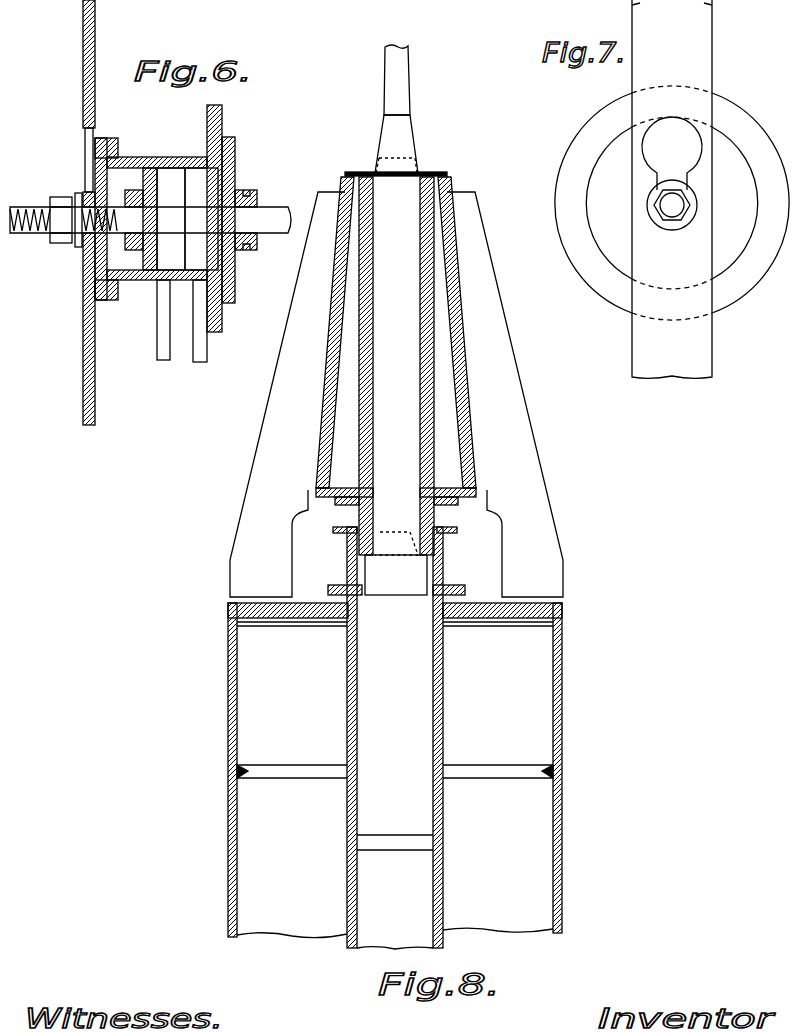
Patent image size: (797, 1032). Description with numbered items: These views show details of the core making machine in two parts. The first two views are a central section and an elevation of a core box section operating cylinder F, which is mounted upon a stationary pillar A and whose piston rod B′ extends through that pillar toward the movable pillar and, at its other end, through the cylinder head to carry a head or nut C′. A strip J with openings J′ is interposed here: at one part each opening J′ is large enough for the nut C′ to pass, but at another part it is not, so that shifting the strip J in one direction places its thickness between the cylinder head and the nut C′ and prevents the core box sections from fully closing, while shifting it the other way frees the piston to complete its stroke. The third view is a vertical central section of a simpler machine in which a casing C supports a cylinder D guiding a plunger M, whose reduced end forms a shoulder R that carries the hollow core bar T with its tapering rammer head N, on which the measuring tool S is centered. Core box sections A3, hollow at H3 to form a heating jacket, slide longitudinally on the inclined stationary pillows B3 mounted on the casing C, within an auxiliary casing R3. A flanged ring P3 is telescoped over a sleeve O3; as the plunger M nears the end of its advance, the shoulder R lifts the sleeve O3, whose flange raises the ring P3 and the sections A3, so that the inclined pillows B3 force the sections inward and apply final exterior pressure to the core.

In FIG. 6, the strip J is at (83, 74).
In FIG. 7, the strip J is at (672, 189).
In FIG. 6, the openings J′ is at (86, 139).
In FIG. 7, the openings J′ is at (672, 153).
In FIG. 6, the nut C′ is at (61, 195).
In FIG. 7, the nut C′ is at (650, 218).
In FIG. 6, the cylinder F is at (153, 157).
In FIG. 6, the stationary pillar A is at (214, 202).
In FIG. 6, the piston rod B′ is at (265, 212).
In FIG. 7, the piston rod B′ is at (684, 207).
In FIG. 8, the measuring tool S is at (405, 95).
In FIG. 8, the rammer head N is at (410, 137).
In FIG. 8, the core box sections A3 is at (444, 269).
In FIG. 8, the core bar T is at (396, 366).
In FIG. 8, the hollow interior H3 is at (462, 444).
In FIG. 8, the pillows B3 is at (275, 399).
In FIG. 8, the flanged ring P3 is at (346, 511).
In FIG. 8, the sleeve O3 is at (418, 547).
In FIG. 8, the auxiliary casing R3 is at (449, 544).
In FIG. 8, the shoulder R is at (396, 575).
In FIG. 8, the cylinder D is at (452, 702).
In FIG. 8, the plunger M is at (395, 802).
In FIG. 8, the casing C is at (572, 714).